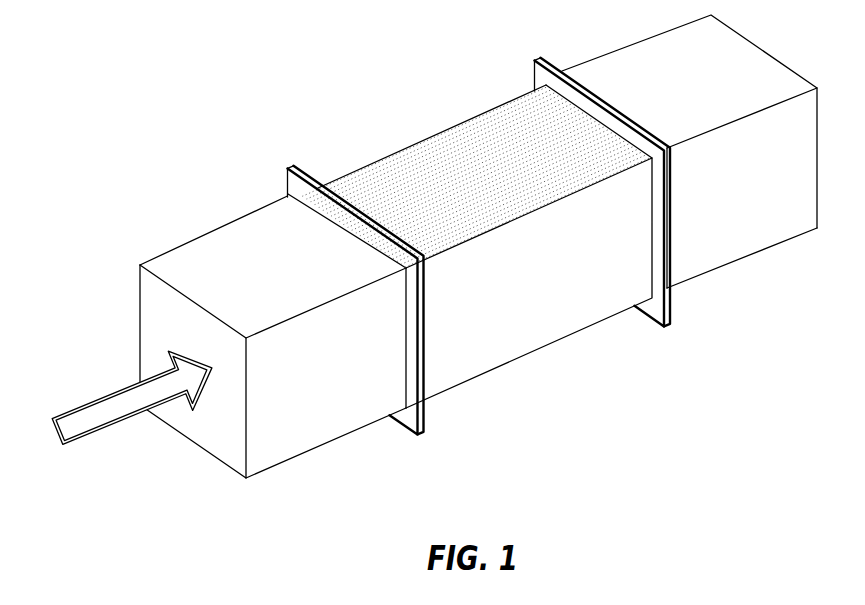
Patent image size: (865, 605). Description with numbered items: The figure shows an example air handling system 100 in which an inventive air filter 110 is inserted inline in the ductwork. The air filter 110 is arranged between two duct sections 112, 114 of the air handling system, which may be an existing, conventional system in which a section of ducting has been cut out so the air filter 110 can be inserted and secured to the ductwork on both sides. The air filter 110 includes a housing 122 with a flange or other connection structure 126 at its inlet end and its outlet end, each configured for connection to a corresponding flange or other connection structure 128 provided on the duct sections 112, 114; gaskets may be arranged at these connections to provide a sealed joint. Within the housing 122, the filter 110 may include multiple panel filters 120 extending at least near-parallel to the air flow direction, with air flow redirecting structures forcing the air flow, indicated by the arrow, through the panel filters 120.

The air handling system 100 is at (108, 121).
The air filter 110 is at (520, 343).
The duct section 112 is at (298, 427).
The duct section 114 is at (768, 227).
The panel filter 120 is at (508, 133).
The housing 122 is at (438, 130).
The flange 126 is at (298, 169).
The flange 128 is at (285, 185).